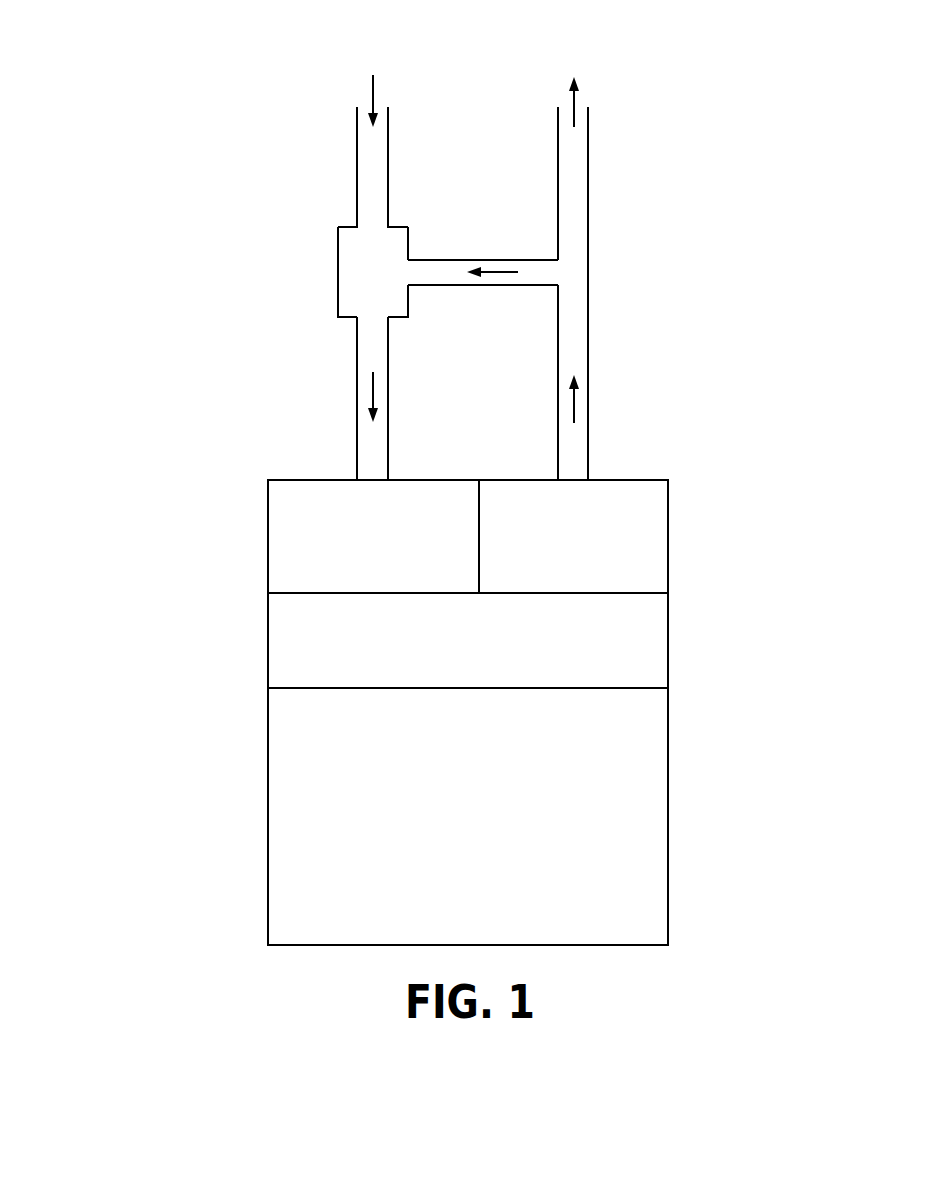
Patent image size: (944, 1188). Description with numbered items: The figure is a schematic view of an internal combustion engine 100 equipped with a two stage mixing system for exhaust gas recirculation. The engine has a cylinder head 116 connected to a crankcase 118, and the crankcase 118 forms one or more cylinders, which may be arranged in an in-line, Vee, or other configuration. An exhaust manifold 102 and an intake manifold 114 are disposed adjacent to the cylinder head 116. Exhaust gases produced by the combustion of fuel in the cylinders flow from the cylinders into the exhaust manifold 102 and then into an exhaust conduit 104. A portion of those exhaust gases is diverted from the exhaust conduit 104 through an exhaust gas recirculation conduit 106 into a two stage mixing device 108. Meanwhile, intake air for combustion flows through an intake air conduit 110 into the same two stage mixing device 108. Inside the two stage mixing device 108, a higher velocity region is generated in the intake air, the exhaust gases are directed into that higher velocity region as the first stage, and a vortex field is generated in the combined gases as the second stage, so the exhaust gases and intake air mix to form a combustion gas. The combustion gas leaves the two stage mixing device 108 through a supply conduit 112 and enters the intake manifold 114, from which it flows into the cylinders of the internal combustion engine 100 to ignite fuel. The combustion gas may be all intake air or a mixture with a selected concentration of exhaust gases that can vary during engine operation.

The internal combustion engine 100 is at (78, 212).
The exhaust manifold 102 is at (625, 548).
The exhaust conduit 104 is at (589, 347).
The exhaust gas recirculation (EGR) conduit 106 is at (448, 260).
The two stage mixing device 108 is at (338, 283).
The intake air conduit 110 is at (357, 173).
The supply conduit 112 is at (357, 430).
The intake manifold 114 is at (347, 553).
The cylinder head 116 is at (620, 643).
The crankcase 118 is at (647, 835).